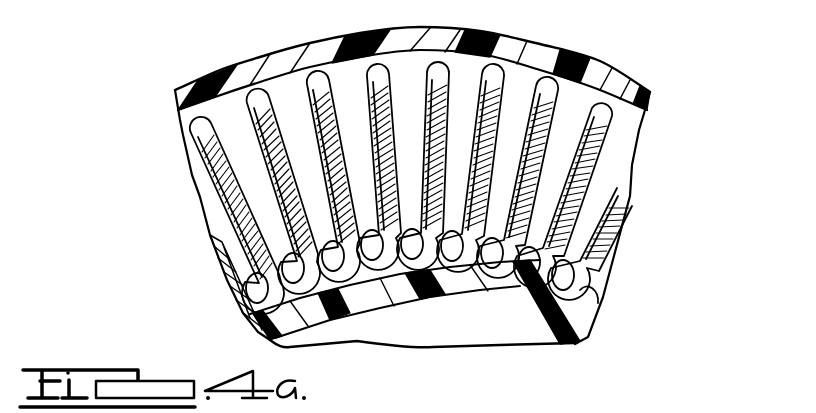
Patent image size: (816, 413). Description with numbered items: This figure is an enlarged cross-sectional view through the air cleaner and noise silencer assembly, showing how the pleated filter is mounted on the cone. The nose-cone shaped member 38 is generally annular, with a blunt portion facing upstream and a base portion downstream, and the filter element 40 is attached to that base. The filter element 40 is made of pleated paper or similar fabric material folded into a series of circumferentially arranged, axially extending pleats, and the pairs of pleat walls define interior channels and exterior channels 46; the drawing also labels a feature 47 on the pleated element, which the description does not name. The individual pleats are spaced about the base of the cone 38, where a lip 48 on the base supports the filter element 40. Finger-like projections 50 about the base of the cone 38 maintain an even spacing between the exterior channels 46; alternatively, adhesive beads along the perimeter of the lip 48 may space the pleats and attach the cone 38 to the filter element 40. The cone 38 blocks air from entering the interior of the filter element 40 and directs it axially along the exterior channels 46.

The nose-cone shaped member 38 is at (414, 347).
The filter element 40 is at (610, 140).
The exterior channels 46 is at (580, 110).
The teeth 47 is at (313, 83).
The lip 48 is at (577, 326).
The finger-like projections 50 is at (520, 278).